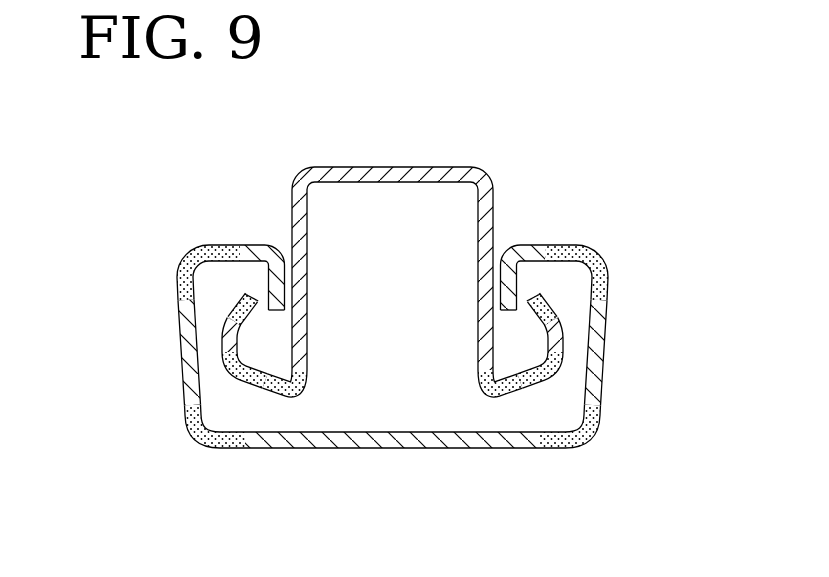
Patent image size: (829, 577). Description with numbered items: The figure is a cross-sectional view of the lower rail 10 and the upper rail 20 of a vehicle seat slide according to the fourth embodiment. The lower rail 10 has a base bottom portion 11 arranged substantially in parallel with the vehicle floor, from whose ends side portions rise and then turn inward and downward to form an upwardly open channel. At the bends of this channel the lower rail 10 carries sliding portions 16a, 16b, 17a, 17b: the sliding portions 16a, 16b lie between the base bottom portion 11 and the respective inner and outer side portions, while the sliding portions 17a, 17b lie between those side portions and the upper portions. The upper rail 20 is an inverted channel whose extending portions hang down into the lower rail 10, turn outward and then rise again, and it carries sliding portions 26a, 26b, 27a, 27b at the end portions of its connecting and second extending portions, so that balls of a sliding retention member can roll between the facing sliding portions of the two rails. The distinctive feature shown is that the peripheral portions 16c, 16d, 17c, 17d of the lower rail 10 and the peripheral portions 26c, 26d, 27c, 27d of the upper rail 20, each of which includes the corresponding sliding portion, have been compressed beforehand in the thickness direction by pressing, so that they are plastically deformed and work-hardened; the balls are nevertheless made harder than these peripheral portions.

The lower rail 10 is at (392, 356).
The base bottom portion 11 is at (370, 447).
The sliding portion 16a is at (188, 408).
The sliding portion 16b is at (597, 409).
The peripheral portion 16c is at (197, 433).
The peripheral portion 16d is at (582, 437).
The sliding portion 17a is at (177, 281).
The sliding portion 17b is at (608, 281).
The peripheral portion 17c is at (211, 245).
The peripheral portion 17d is at (577, 247).
The upper rail 20 is at (401, 259).
The sliding portion 26a is at (250, 390).
The sliding portion 26b is at (535, 390).
The peripheral portion 26c is at (263, 373).
The peripheral portion 26d is at (522, 373).
The sliding portion 27a is at (236, 308).
The sliding portion 27b is at (549, 308).
The peripheral portion 27c is at (262, 323).
The peripheral portion 27d is at (523, 323).